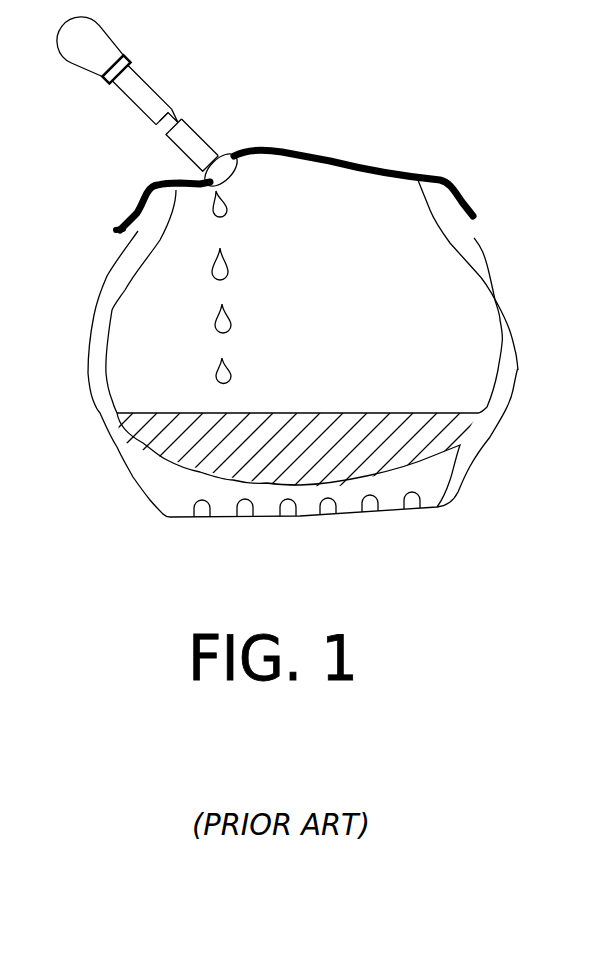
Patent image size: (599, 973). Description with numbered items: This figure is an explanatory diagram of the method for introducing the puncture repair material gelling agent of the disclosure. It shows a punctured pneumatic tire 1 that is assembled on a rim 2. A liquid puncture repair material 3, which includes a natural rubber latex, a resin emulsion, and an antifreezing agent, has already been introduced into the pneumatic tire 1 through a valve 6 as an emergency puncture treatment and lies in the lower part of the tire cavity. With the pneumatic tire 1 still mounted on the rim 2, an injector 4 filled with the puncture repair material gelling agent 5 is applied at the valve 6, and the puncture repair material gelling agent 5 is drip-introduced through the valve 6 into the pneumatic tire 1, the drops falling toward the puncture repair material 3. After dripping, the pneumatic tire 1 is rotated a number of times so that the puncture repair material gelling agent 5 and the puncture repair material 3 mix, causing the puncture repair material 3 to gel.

The pneumatic tire 1 is at (490, 250).
The rim 2 is at (413, 173).
The puncture repair material 3 is at (420, 445).
The injector 4 is at (96, 68).
The puncture repair material gelling agent 5 is at (213, 325).
The valve 6 is at (197, 145).